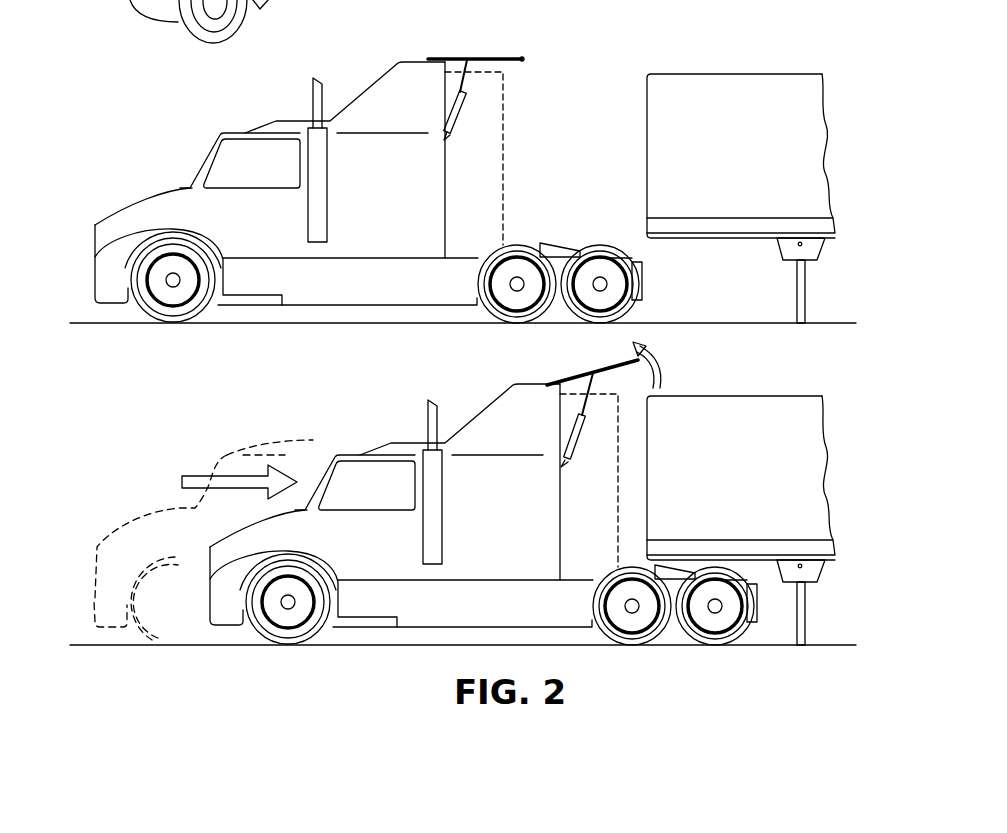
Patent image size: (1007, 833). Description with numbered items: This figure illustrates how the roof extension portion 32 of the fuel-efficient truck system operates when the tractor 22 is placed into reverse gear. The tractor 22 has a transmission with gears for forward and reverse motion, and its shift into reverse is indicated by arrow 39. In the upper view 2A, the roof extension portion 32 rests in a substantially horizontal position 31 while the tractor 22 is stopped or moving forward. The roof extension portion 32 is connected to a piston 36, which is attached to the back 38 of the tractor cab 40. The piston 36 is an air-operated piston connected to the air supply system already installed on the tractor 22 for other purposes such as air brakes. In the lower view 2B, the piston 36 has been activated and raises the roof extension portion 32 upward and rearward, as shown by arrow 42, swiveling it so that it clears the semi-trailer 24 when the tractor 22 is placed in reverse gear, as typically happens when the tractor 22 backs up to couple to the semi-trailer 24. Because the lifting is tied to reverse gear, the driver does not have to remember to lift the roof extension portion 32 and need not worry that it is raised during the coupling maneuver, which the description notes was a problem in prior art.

The tractor 22 is at (67, 0).
The view of roof extension in horizontal resting position 2A is at (199, 152).
The view of roof extension raised by piston 2B is at (344, 441).
The semi-trailer 24 is at (728, 239).
The substantially horizontal position 31 is at (523, 59).
The roof extension portion 32 is at (490, 58).
The piston 36 is at (457, 118).
The back of the tractor cab 38 is at (446, 190).
The arrow indicating reverse gear 39 is at (188, 470).
The tractor cab 40 is at (363, 237).
The arrow indicating raising of roof extension 42 is at (662, 372).